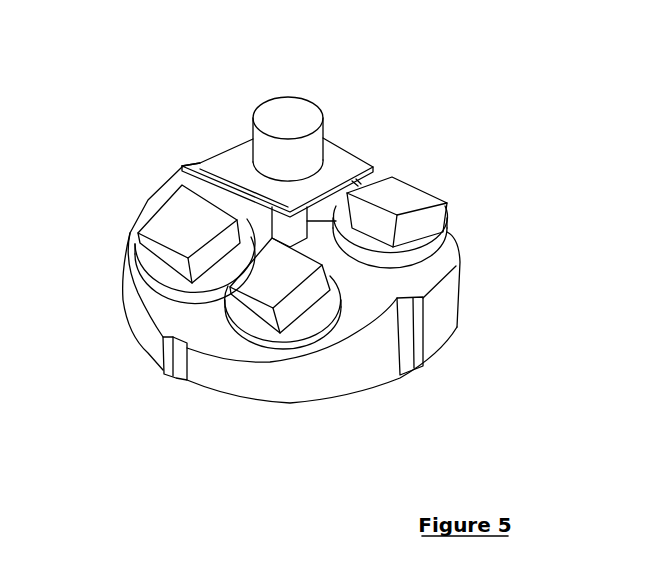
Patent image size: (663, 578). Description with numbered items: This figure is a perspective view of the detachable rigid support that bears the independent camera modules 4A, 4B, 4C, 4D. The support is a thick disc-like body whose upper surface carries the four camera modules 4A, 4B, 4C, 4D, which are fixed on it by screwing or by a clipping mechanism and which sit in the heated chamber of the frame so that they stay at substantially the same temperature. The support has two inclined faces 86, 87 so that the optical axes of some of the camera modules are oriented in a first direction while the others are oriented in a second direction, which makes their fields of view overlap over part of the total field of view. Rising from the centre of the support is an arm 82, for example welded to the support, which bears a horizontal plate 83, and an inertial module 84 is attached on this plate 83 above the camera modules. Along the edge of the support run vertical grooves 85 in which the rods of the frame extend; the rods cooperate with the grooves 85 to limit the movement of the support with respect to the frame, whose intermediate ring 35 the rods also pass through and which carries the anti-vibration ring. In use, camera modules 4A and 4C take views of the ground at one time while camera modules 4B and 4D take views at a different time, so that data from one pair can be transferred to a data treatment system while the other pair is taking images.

The camera module 4A is at (280, 285).
The camera module 4B is at (189, 234).
The camera module 4C is at (397, 212).
The camera module 4D is at (357, 183).
The intermediate ring 35 is at (172, 345).
The arm 82 is at (289, 227).
The horizontal plate 83 is at (336, 157).
The inertial module 84 is at (280, 99).
The vertical grooves 85 is at (410, 342).
The inclined face 86 is at (443, 265).
The inclined face 87 is at (357, 330).